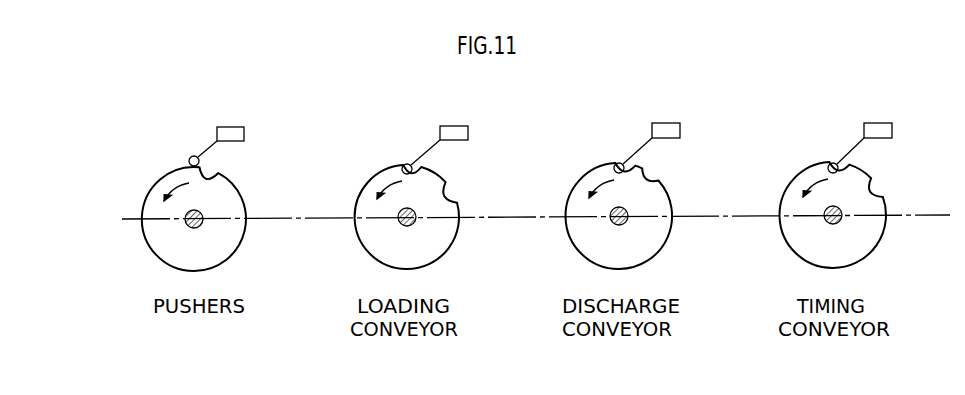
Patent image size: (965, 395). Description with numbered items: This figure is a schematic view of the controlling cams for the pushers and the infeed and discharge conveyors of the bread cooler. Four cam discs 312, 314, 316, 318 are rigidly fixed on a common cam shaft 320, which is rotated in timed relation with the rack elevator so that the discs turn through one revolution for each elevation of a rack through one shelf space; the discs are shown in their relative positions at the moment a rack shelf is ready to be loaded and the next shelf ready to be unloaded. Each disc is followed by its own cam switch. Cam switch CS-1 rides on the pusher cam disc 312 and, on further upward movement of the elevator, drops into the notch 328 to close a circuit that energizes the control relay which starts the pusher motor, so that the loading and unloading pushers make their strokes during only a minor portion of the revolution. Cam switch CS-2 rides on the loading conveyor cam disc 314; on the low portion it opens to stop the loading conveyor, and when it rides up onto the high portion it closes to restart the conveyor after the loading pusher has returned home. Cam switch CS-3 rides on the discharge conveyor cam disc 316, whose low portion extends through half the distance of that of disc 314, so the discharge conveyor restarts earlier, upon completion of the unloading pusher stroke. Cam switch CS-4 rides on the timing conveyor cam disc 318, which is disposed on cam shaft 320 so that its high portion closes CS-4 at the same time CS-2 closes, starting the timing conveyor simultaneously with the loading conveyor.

The cam disc 312 is at (240, 192).
The cam disc 314 is at (455, 245).
The cam disc 316 is at (668, 238).
The cam disc 318 is at (880, 245).
The cam shaft 320 is at (188, 225).
The notch 328 is at (208, 178).
The cam switch CS-1 is at (244, 127).
The cam switch CS-2 is at (468, 126).
The cam switch CS-3 is at (680, 123).
The cam switch CS-4 is at (892, 123).